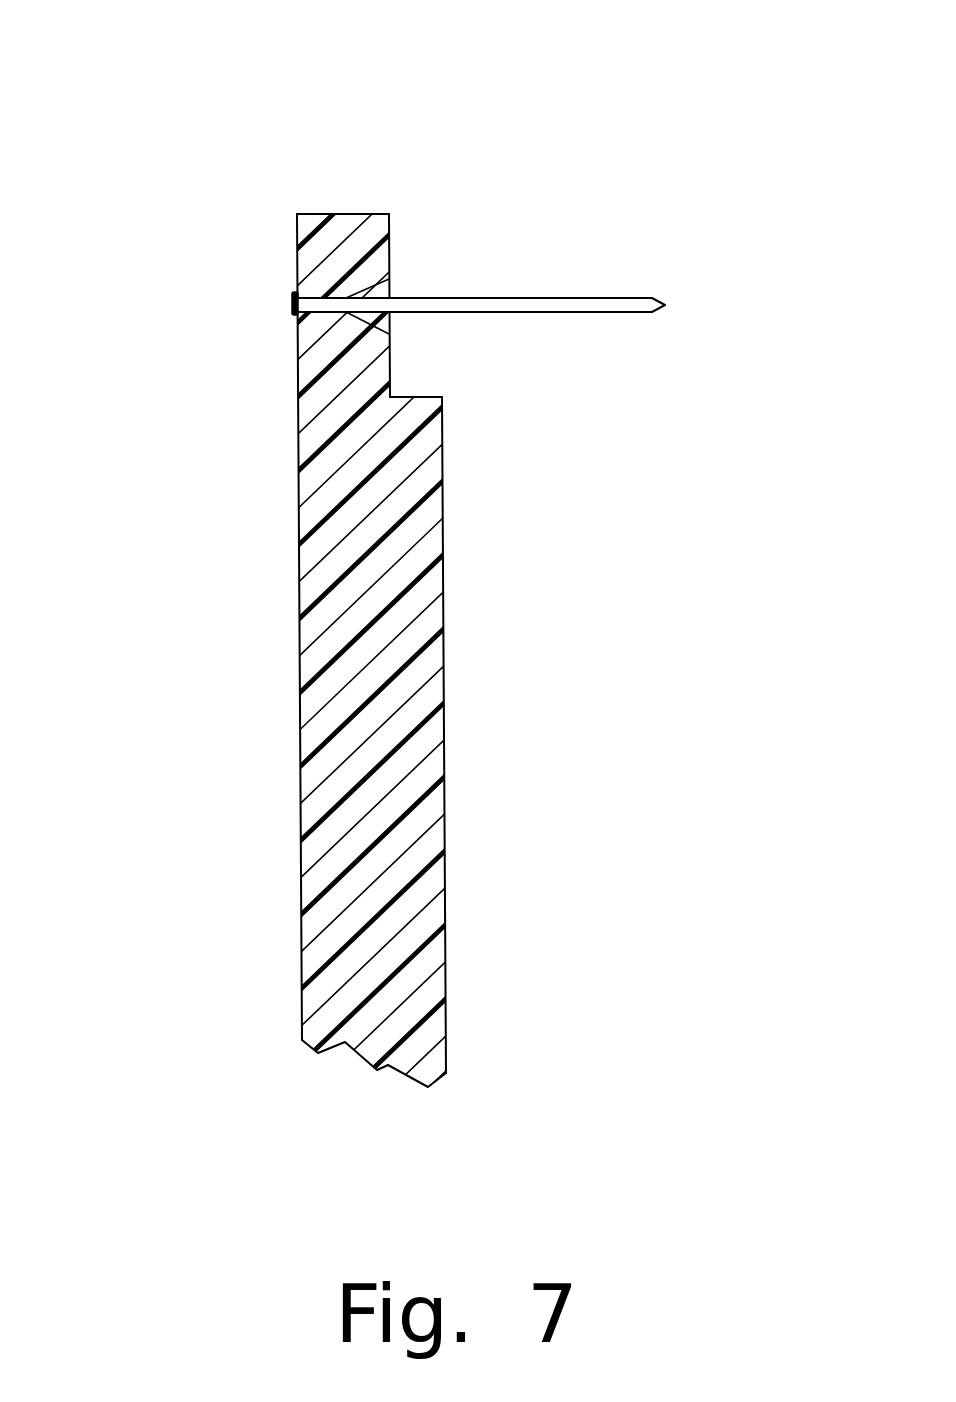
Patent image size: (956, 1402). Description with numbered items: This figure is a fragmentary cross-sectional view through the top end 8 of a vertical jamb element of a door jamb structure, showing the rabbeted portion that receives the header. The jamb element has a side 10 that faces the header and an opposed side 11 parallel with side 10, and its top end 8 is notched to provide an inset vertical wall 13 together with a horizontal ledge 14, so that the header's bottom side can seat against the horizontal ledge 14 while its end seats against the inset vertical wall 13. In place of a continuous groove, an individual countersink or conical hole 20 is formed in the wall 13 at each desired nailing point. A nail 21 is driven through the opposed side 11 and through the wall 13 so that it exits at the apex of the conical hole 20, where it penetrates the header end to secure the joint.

The top end 8 is at (344, 612).
The side 10 is at (565, 735).
The opposed side 11 is at (203, 627).
The inset vertical wall 13 is at (496, 198).
The horizontal ledge 14 is at (596, 362).
The countersink or conical hole 20 is at (235, 347).
The nail 21 is at (513, 233).